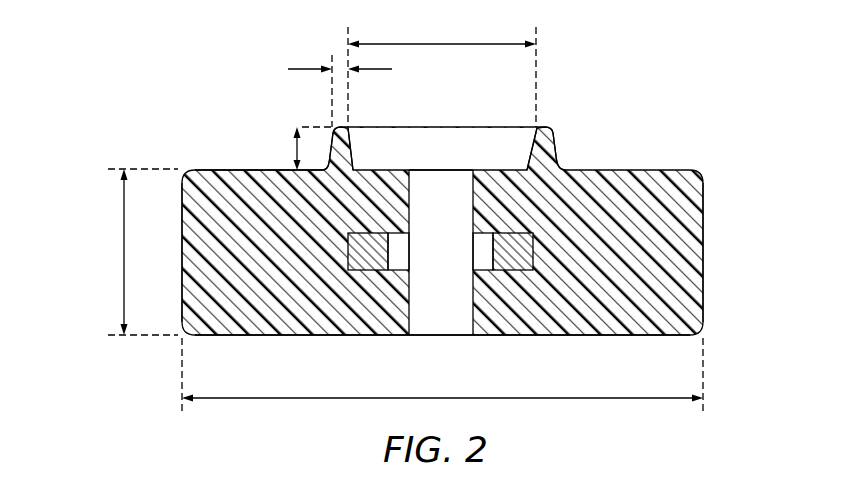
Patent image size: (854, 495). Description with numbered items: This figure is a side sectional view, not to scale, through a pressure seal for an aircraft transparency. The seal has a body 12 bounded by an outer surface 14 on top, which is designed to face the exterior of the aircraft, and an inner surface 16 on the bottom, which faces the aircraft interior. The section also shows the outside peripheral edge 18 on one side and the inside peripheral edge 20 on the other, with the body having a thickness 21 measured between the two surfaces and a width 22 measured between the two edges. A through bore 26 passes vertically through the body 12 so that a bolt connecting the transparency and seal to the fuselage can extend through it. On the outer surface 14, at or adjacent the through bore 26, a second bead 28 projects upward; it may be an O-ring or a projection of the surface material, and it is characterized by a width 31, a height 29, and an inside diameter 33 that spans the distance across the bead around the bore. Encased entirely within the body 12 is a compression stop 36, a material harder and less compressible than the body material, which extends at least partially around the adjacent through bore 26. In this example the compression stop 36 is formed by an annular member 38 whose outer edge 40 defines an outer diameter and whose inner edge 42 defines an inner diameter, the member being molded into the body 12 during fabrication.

The body 12 is at (684, 213).
The outer surface 14 is at (220, 162).
The inner surface 16 is at (572, 345).
The outside peripheral edge 18 is at (172, 260).
The inside peripheral edge 20 is at (710, 262).
The thickness 21 is at (122, 254).
The width 22 is at (436, 398).
The through bore 26 is at (440, 183).
The second bead 28 is at (341, 128).
The height 29 is at (285, 147).
The width 31 is at (322, 67).
The inside diameter 33 is at (427, 43).
The compression stop 36 is at (358, 307).
The annular member 38 is at (363, 258).
The outer edge 40 is at (540, 256).
The inner edge 42 is at (488, 250).